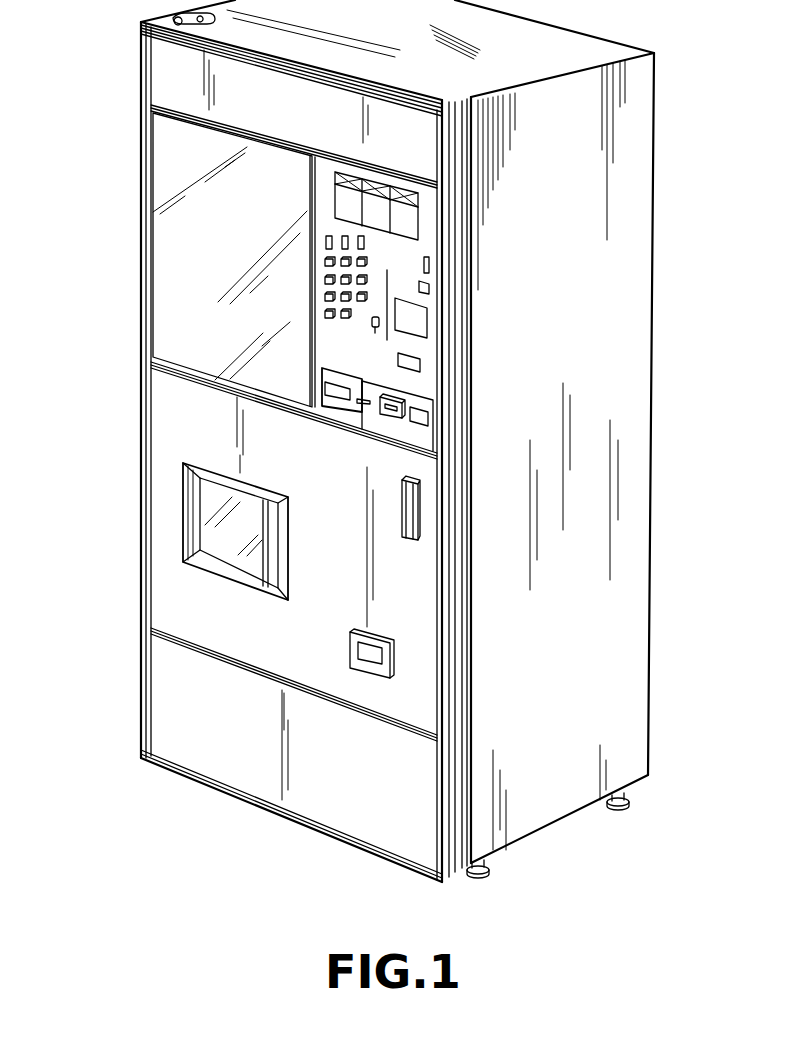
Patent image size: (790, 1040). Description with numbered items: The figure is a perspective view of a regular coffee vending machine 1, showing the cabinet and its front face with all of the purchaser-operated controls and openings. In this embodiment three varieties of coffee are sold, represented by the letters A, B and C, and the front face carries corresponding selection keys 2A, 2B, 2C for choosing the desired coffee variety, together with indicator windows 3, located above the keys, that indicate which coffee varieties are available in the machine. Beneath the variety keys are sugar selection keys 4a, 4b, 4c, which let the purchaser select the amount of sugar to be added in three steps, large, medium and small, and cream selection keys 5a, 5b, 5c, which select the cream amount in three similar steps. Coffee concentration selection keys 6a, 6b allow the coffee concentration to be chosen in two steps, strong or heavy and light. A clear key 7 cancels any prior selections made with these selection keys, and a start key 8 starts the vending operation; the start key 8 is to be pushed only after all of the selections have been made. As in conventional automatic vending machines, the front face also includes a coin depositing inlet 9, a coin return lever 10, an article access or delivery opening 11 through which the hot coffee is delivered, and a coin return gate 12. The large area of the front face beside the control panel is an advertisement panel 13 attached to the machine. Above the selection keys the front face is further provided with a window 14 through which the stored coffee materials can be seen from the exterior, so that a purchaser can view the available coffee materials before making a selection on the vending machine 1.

The regular coffee vending machine 1 is at (138, 436).
The selection key 2A is at (325, 261).
The selection key 2B is at (341, 264).
The selection key 2C is at (366, 268).
The indicator windows 3 is at (360, 242).
The sugar selection key 4a is at (325, 282).
The sugar selection key 4b is at (341, 284).
The sugar selection key 4c is at (366, 283).
The cream selection key 5a is at (325, 300).
The cream selection key 5b is at (346, 314).
The cream selection key 5c is at (361, 303).
The coffee concentration selection key 6a is at (325, 317).
The coffee concentration selection key 6b is at (345, 320).
The clear key 7 is at (377, 334).
The start key 8 is at (429, 287).
The coin depositing inlet 9 is at (390, 420).
The coin return lever 10 is at (363, 404).
The article access or delivery opening 11 is at (231, 548).
The coin return gate 12 is at (366, 652).
The advertisement panel 13 is at (164, 283).
The window 14 is at (420, 228).